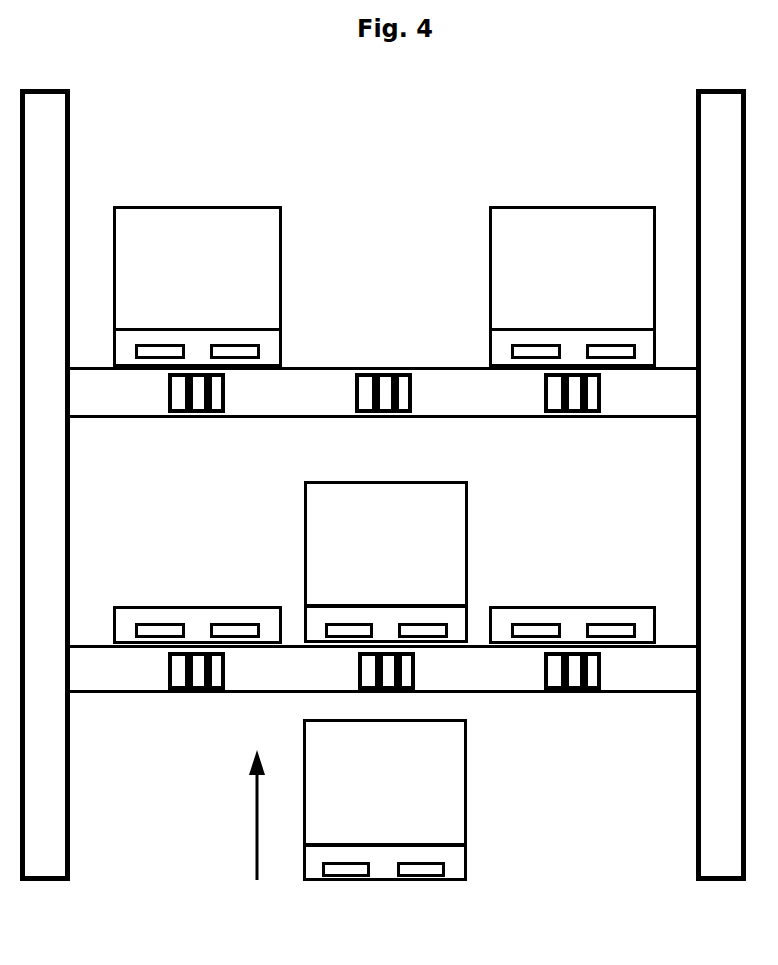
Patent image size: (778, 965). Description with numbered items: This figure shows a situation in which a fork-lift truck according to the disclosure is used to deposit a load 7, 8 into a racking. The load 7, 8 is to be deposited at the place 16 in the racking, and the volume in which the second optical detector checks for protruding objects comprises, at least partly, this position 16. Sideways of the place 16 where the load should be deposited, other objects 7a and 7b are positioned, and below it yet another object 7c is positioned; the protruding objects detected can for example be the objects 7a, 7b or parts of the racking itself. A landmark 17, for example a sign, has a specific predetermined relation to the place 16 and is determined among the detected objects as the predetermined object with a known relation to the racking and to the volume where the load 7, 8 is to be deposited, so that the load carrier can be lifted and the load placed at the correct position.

The load 7 is at (385, 783).
The object 7a is at (198, 287).
The object 7b is at (573, 287).
The object 7c is at (386, 562).
The load 8 is at (385, 863).
The place where the load should be deposited 16 is at (383, 340).
The landmark 17 is at (414, 394).